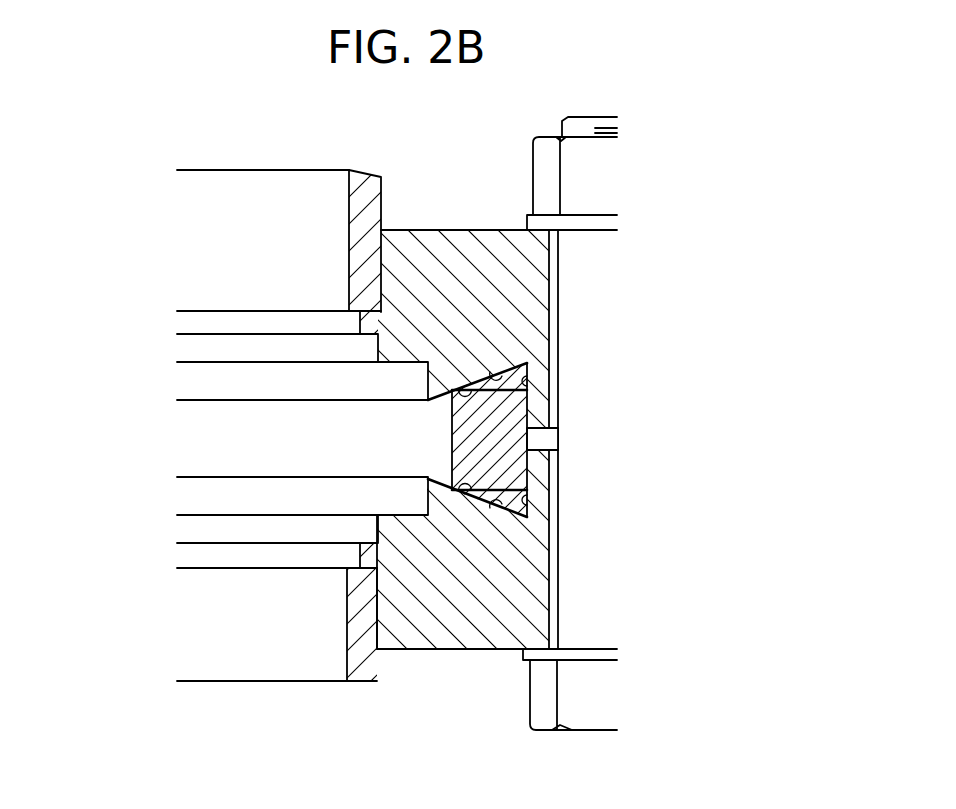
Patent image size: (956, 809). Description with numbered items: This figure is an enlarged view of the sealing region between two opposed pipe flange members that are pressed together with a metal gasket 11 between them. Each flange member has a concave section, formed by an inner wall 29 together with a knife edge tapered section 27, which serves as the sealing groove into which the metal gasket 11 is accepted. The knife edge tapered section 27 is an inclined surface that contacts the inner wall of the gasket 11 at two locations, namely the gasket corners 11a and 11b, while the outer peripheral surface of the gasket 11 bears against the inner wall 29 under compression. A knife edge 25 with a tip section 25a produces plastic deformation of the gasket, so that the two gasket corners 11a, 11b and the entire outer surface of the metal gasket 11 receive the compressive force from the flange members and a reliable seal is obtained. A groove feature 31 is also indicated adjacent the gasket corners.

The metal gasket 11 is at (455, 437).
The gasket corner 11a is at (470, 490).
The gasket corner 11b is at (470, 388).
The knife edge 25 is at (428, 378).
The tip section of knife edge 25a is at (432, 395).
The knife edge tapered section 27 is at (519, 361).
The inner wall 29 is at (524, 388).
The seal groove 31 is at (524, 371).